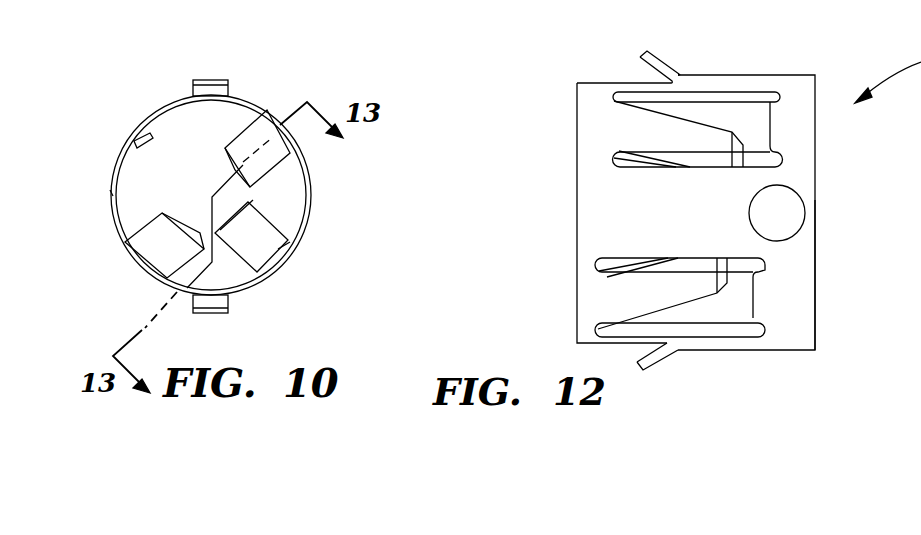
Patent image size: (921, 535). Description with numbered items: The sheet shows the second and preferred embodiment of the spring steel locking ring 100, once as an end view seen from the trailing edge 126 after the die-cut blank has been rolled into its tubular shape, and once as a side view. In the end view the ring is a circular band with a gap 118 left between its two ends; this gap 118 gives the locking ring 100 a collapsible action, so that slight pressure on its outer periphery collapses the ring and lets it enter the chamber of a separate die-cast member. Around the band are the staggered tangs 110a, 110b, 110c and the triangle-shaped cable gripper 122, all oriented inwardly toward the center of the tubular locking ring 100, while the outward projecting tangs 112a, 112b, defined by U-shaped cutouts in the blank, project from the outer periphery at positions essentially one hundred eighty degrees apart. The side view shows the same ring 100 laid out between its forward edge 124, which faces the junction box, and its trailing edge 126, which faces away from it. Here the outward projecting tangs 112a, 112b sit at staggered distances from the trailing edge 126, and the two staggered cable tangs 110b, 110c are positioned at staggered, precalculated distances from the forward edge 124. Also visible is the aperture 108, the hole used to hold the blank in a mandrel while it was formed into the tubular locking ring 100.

In FIG. 10, the spring steel locking ring 100 is at (374, 189).
In FIG. 12, the aperture 108 is at (782, 213).
In FIG. 10, the staggered tang 110a is at (157, 255).
In FIG. 10, the staggered tang 110b is at (287, 252).
In FIG. 12, the staggered tang 110b is at (688, 295).
In FIG. 10, the staggered tang 110c is at (267, 124).
In FIG. 12, the staggered tang 110c is at (717, 153).
In FIG. 10, the outward projecting tang 112a is at (211, 303).
In FIG. 12, the outward projecting tang 112a is at (656, 358).
In FIG. 10, the outward projecting tang 112b is at (196, 82).
In FIG. 12, the outward projecting tang 112b is at (656, 63).
In FIG. 10, the gap 118 is at (113, 193).
In FIG. 10, the triangle-shaped cable gripper 122 is at (137, 146).
In FIG. 12, the forward edge 124 is at (815, 287).
In FIG. 10, the trailing edge 126 is at (308, 186).
In FIG. 12, the trailing edge 126 is at (578, 128).